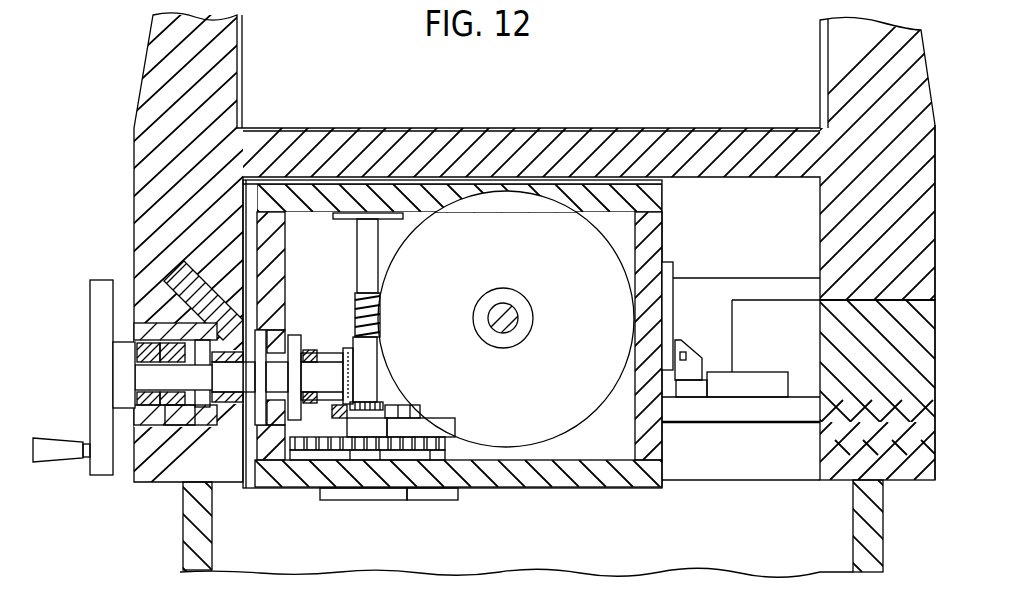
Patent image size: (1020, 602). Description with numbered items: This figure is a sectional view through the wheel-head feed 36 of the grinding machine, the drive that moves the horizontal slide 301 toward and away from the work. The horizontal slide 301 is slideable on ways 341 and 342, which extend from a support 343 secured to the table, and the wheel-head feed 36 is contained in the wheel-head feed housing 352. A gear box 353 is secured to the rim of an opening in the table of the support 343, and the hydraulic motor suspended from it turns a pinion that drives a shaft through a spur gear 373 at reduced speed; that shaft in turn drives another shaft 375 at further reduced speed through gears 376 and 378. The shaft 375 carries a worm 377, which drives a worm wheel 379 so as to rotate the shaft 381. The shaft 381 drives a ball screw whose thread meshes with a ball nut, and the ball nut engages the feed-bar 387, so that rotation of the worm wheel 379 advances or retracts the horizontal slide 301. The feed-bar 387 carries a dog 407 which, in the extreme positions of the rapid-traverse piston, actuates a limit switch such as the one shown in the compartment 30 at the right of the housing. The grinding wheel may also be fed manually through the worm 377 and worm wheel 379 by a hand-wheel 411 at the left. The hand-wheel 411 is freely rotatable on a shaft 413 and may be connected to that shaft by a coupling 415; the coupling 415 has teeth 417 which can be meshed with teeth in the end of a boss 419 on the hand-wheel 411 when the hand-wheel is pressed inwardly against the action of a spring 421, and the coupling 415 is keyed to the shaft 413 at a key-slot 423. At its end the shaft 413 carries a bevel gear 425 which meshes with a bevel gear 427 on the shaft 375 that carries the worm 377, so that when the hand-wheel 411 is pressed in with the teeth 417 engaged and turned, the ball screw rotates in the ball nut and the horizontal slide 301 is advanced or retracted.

The horizontal slide 301 is at (138, 82).
The wheel-head feed 36 is at (487, 87).
The compartment 30 is at (741, 336).
The way 341 is at (172, 287).
The way 342 is at (886, 300).
The support 343 is at (185, 527).
The wheel-head feed housing 352 is at (918, 424).
The gear box 353 is at (625, 487).
The spur gear 373 is at (405, 412).
The shaft 375 is at (362, 246).
The gear 376 is at (378, 429).
The worm 377 is at (357, 301).
The gear 378 is at (455, 425).
The worm wheel 379 is at (581, 408).
The shaft 381 is at (513, 305).
The feed-bar 387 is at (668, 296).
The dog 407 is at (693, 378).
The hand-wheel 411 is at (90, 303).
The shaft 413 is at (155, 426).
The coupling 415 is at (137, 350).
The teeth 417 is at (137, 404).
The boss 419 is at (122, 380).
The spring 421 is at (176, 427).
The key-slot 423 is at (192, 375).
The bevel gear 425 is at (346, 350).
The bevel gear 427 is at (381, 408).